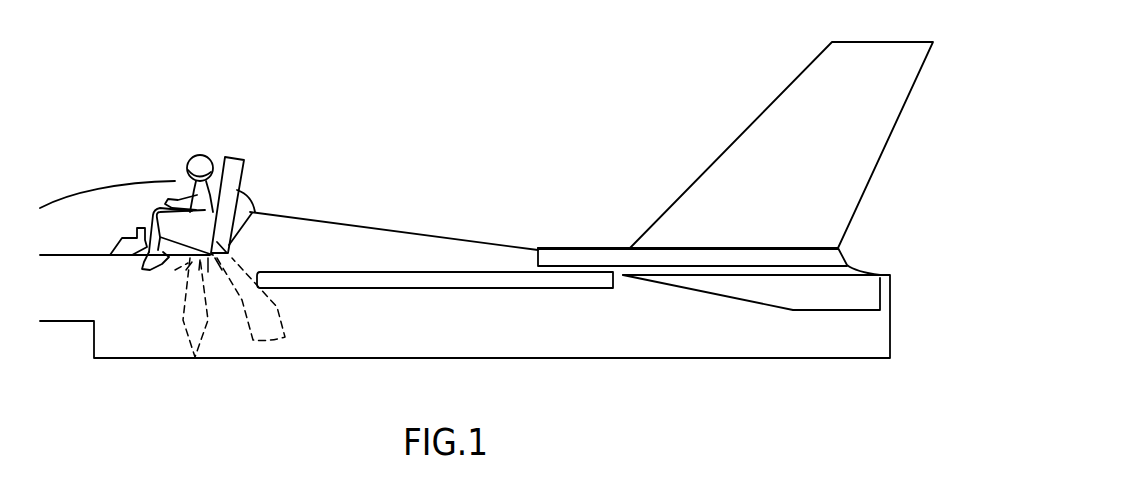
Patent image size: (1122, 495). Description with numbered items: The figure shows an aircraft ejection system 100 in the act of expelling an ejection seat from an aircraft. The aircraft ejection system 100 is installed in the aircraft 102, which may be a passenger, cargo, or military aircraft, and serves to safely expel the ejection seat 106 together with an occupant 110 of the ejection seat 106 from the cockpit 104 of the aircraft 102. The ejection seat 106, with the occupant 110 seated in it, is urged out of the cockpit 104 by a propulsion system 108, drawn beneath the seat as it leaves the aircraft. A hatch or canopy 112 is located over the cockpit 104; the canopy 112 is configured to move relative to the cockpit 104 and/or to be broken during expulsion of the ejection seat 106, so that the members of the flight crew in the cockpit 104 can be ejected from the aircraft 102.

The aircraft ejection system 100 is at (296, 181).
The aircraft 102 is at (563, 242).
The cockpit 104 is at (69, 224).
The ejection seat 106 is at (244, 160).
The propulsion system 108 is at (200, 325).
The occupant 110 is at (198, 155).
The canopy 112 is at (124, 182).